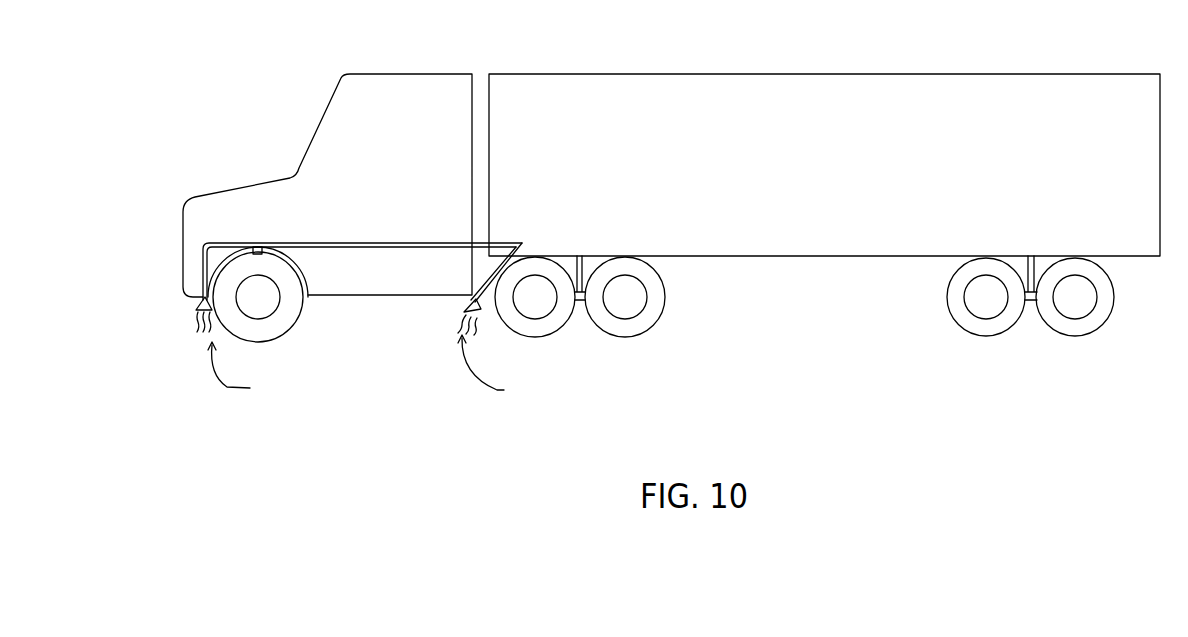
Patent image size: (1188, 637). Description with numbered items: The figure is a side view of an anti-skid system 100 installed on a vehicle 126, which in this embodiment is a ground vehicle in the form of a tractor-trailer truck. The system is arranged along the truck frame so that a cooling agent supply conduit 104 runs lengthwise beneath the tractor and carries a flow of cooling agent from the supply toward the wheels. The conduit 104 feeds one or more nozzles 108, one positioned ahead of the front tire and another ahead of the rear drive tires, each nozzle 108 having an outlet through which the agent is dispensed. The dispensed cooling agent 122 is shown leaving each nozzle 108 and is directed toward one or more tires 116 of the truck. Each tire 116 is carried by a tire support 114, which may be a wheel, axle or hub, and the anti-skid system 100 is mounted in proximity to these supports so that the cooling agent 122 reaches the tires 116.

The anti-skid system 100 is at (333, 408).
The cooling agent supply conduit 104 is at (401, 241).
The nozzle 108 is at (196, 305).
The tire support 114 is at (262, 250).
The tire 116 is at (282, 313).
The cooling agent 122 is at (373, 367).
The vehicle 126 is at (442, 97).